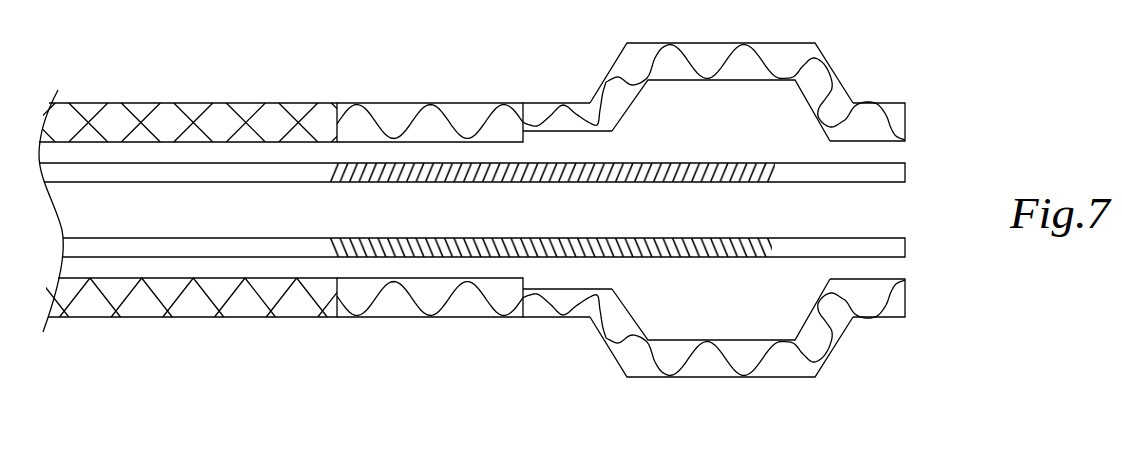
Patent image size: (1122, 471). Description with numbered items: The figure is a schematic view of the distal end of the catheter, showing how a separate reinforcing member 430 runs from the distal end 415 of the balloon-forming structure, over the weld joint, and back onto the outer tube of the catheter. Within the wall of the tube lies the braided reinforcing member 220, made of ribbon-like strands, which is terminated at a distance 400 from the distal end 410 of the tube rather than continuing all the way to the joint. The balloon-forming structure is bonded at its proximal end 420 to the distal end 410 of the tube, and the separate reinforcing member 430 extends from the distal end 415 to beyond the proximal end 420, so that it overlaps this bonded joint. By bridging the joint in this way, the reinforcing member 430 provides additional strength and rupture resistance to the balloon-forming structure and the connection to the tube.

The braided reinforcing member 220 is at (143, 115).
The distance 400 is at (525, 97).
The distal end of tube 410 is at (528, 103).
The distal end of balloon-forming structure 415 is at (907, 118).
The proximal end of balloon-forming structure 420 is at (528, 316).
The separate reinforcing member 430 is at (690, 53).